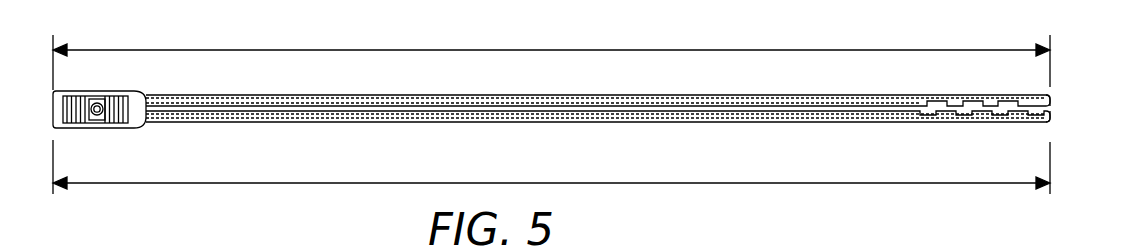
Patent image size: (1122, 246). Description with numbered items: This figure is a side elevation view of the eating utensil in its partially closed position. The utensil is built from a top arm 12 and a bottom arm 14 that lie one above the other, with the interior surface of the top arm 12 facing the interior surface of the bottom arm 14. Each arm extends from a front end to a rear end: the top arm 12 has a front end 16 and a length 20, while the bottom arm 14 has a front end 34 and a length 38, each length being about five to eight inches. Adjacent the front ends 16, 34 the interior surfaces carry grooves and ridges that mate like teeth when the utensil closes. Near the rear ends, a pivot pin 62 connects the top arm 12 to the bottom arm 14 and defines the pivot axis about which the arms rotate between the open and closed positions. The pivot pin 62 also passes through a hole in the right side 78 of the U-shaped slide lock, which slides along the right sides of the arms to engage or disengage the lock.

The top arm 12 is at (183, 100).
The bottom arm 14 is at (193, 117).
The front end 16 is at (1053, 93).
The length 20 is at (462, 49).
The front end 34 is at (1053, 122).
The length 38 is at (615, 184).
The pivot pin 62 is at (102, 103).
The right side 78 is at (101, 118).